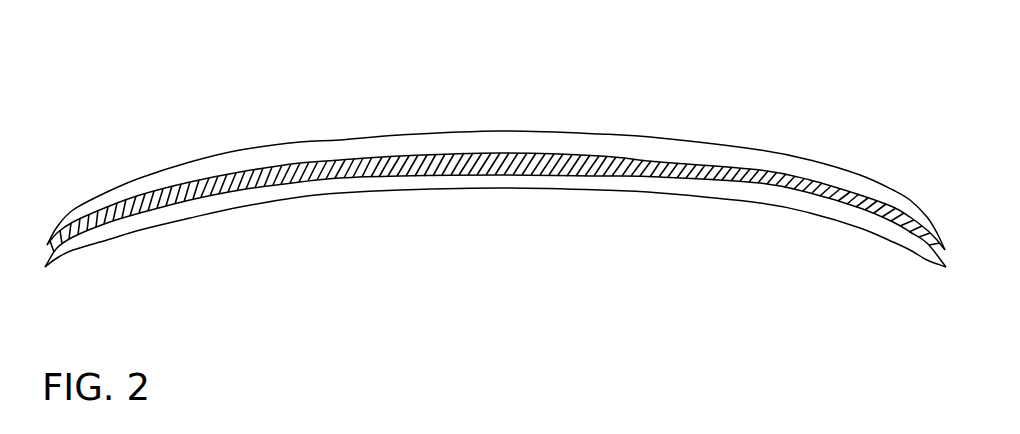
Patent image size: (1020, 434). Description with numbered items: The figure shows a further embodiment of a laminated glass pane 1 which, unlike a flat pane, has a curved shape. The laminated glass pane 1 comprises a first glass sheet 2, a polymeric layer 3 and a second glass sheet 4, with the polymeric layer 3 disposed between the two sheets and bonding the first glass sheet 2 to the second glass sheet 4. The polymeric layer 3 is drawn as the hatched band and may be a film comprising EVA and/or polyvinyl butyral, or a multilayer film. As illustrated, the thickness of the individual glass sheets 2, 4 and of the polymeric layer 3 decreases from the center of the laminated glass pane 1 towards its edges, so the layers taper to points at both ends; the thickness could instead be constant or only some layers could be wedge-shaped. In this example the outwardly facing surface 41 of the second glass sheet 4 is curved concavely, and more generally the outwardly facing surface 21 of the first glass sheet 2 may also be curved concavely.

The laminated glass pane 1 is at (487, 42).
The first glass sheet 2 is at (180, 180).
The outwardly facing surface of first glass sheet 21 is at (298, 142).
The polymeric layer 3 is at (813, 195).
The second glass sheet 4 is at (228, 198).
The outwardly facing surface of second glass sheet 41 is at (415, 188).